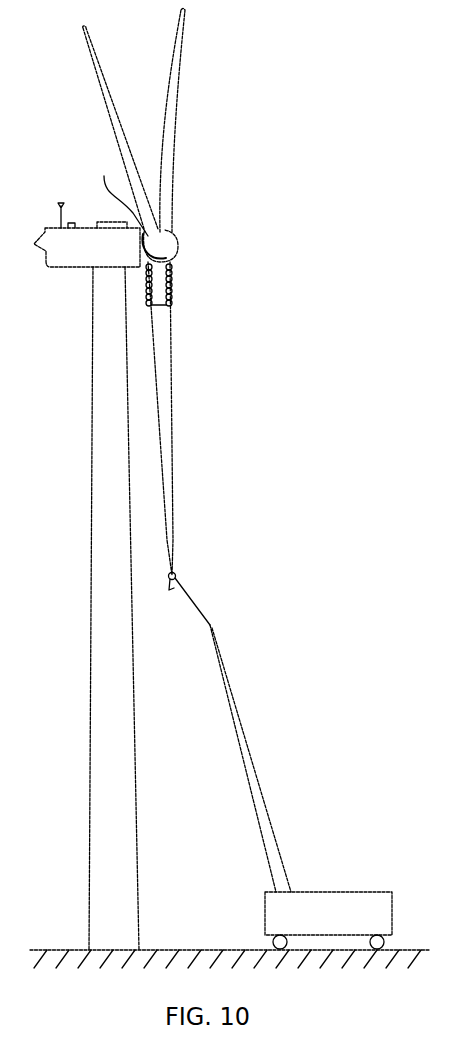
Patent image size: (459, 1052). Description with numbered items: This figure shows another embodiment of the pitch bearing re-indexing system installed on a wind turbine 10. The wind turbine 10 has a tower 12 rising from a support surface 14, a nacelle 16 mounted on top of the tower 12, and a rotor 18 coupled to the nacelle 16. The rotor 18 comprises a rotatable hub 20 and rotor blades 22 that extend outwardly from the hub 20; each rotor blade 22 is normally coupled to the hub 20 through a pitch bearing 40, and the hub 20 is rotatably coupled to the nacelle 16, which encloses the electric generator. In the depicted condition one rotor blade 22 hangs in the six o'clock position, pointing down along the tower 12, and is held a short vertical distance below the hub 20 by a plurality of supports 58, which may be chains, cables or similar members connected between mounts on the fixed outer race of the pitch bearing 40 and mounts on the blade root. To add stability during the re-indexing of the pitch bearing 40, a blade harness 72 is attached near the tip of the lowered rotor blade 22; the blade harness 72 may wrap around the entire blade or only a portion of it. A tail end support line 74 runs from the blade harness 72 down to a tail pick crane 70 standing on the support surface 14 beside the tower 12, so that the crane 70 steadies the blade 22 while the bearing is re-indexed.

The wind turbine 10 is at (278, 155).
The tower 12 is at (125, 712).
The support surface 14 is at (63, 948).
The nacelle 16 is at (63, 267).
The rotor 18 is at (180, 236).
The rotatable hub 20 is at (180, 244).
The rotor blade 22 is at (106, 74).
The pitch bearing 40 is at (131, 204).
The supports 58 is at (172, 291).
The tail pick crane 70 is at (342, 892).
The blade harness 72 is at (178, 575).
The cable / tether 74 is at (210, 622).